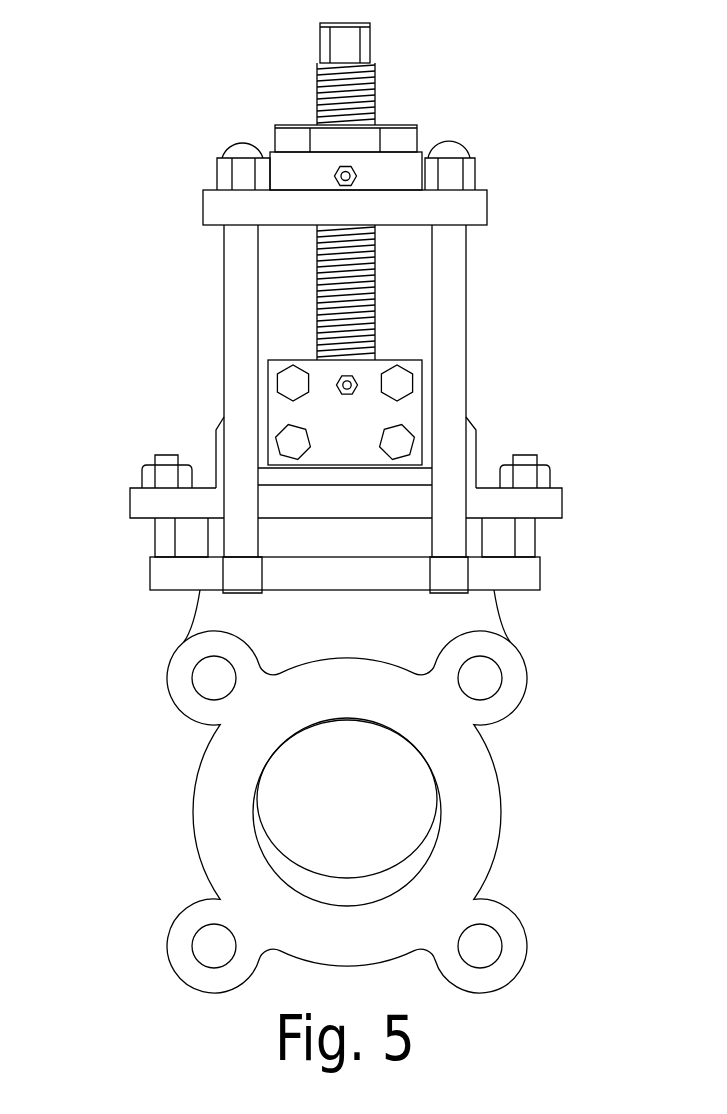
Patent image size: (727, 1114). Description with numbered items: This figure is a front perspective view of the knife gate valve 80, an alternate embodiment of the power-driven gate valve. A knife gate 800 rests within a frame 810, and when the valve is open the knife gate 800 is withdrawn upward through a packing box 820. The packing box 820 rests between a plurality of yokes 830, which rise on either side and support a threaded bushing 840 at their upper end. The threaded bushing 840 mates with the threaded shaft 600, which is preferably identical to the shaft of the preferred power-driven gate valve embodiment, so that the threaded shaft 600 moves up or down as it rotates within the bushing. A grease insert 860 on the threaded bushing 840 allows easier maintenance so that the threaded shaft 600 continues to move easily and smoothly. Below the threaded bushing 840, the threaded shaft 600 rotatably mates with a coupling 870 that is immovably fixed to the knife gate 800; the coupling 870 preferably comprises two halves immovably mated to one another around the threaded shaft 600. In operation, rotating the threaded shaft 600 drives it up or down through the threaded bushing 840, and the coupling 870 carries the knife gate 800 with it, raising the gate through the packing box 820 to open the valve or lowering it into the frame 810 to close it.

The knife gate valve 80 is at (346, 501).
The threaded shaft 600 is at (315, 288).
The threaded bushing 840 is at (427, 138).
The grease insert 860 is at (332, 175).
The yokes 830 is at (237, 410).
The coupling 870 is at (388, 412).
The packing box 820 is at (367, 498).
The frame 810 is at (445, 615).
The knife gate 800 is at (382, 797).